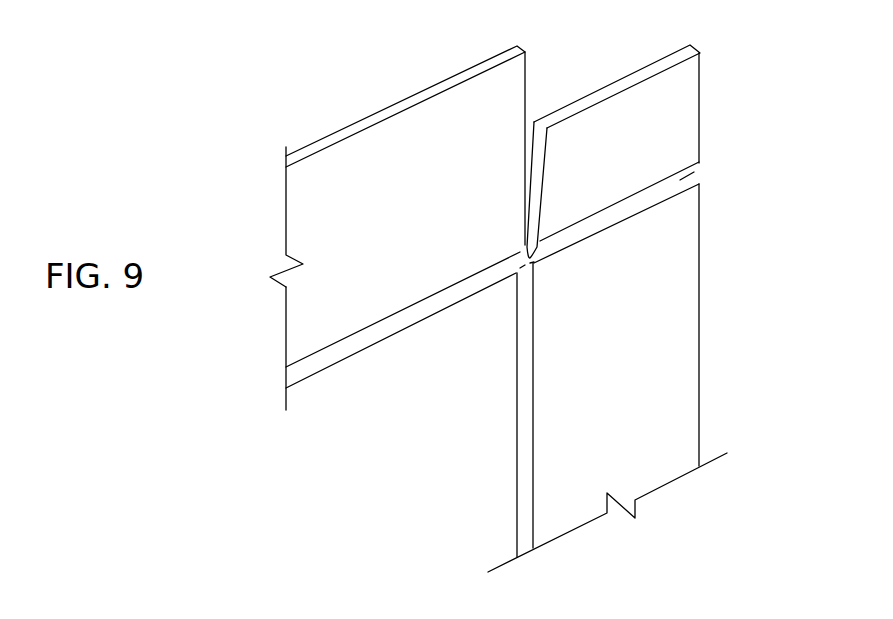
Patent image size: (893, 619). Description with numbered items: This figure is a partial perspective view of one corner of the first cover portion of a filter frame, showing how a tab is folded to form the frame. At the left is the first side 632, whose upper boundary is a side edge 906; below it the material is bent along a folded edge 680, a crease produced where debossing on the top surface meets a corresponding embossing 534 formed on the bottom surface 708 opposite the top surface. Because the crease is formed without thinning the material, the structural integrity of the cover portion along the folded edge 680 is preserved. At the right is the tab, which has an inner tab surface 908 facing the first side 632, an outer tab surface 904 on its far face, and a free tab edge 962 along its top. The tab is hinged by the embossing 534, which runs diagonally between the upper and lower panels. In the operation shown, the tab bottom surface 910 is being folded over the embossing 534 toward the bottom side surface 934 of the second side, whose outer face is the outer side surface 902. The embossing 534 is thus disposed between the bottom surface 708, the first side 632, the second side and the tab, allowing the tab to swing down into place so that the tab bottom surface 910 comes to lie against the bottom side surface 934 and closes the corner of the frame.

The side edge 906 is at (305, 147).
The first side 632 is at (422, 189).
The bottom surface 708 is at (490, 373).
The folded edge 680 is at (398, 333).
The tab edge 962 is at (625, 77).
The inner tab surface 908 is at (536, 190).
The outer tab surface 904 is at (699, 94).
The tab bottom surface 910 is at (639, 160).
The embossing 534 is at (699, 166).
The outer side surface 902 is at (699, 290).
The bottom side surface 934 is at (640, 342).